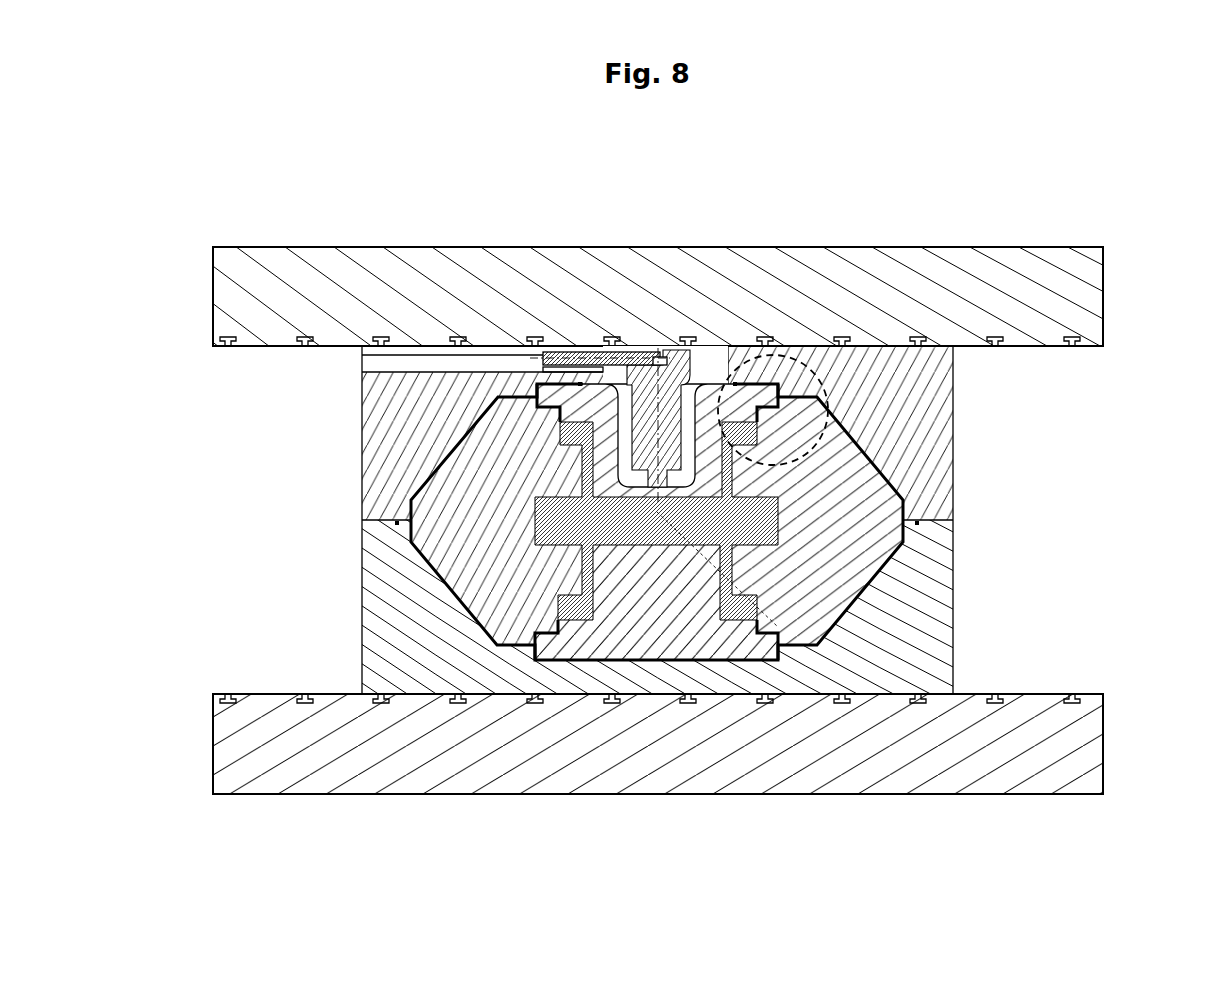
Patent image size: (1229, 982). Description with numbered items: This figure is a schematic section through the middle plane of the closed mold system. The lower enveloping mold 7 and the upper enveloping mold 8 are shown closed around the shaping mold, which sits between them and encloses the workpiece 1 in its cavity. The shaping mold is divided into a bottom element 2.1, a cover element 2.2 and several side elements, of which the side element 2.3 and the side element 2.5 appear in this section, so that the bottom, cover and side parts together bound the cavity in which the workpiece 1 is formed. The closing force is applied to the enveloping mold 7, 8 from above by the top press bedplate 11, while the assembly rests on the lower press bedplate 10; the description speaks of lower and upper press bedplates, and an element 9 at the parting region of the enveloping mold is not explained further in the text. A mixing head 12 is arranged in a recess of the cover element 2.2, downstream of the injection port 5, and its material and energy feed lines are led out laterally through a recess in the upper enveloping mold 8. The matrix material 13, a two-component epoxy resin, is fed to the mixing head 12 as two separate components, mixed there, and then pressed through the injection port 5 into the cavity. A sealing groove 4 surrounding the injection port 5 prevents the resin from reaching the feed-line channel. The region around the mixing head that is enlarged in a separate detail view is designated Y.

The workpiece 1 is at (553, 521).
The bottom element 2.1 is at (658, 625).
The cover element 2.2 is at (563, 398).
The side element 2.3 is at (867, 542).
The side element 2.5 is at (483, 566).
The sealing groove 4 is at (580, 384).
The injection port 5 is at (658, 502).
The lower enveloping mold 7 is at (913, 644).
The upper enveloping mold 8 is at (925, 462).
The parting line 9 is at (397, 523).
The lower plate 10 is at (865, 765).
The top press bedplate 11 is at (1030, 310).
The mixing head 12 is at (672, 400).
The matrix material 13 is at (797, 395).
The detail area Y is at (828, 450).